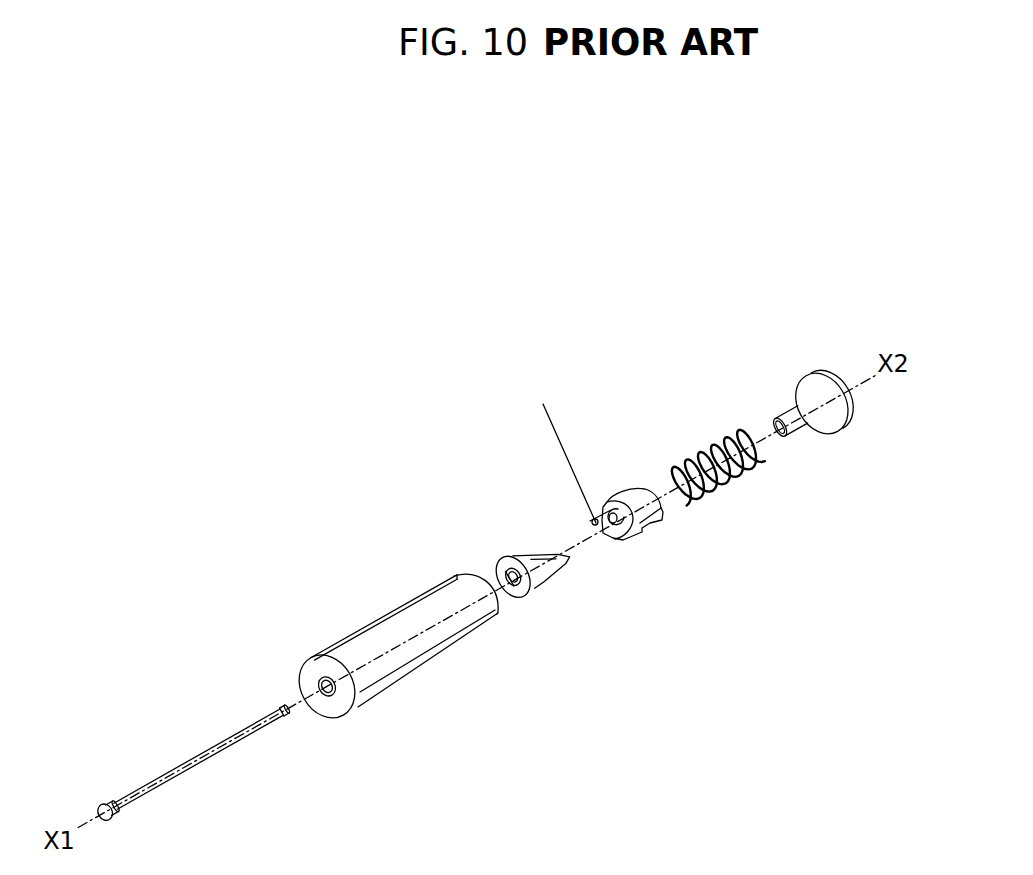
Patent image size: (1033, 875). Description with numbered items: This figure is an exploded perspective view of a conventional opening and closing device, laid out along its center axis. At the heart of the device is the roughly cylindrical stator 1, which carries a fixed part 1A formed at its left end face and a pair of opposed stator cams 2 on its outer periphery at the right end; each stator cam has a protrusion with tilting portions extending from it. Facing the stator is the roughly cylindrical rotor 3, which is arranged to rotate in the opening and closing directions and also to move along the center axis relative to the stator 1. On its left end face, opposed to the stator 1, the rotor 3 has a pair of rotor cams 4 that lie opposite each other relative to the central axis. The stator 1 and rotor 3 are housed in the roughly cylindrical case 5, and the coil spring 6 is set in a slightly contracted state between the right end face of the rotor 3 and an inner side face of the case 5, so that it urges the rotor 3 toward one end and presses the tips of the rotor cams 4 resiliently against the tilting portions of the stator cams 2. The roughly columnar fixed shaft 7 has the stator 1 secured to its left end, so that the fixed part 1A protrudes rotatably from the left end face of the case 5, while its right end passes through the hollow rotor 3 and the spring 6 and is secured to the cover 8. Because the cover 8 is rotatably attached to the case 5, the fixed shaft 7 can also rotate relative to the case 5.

The stator 1 is at (535, 590).
The fixed part 1A is at (508, 570).
The stator cams 2 is at (560, 570).
The rotor 3 is at (634, 492).
The rotor cams 4 is at (588, 514).
The case 5 is at (392, 627).
The coil spring 6 is at (733, 490).
The fixed shaft 7 is at (193, 750).
The cover 8 is at (790, 405).